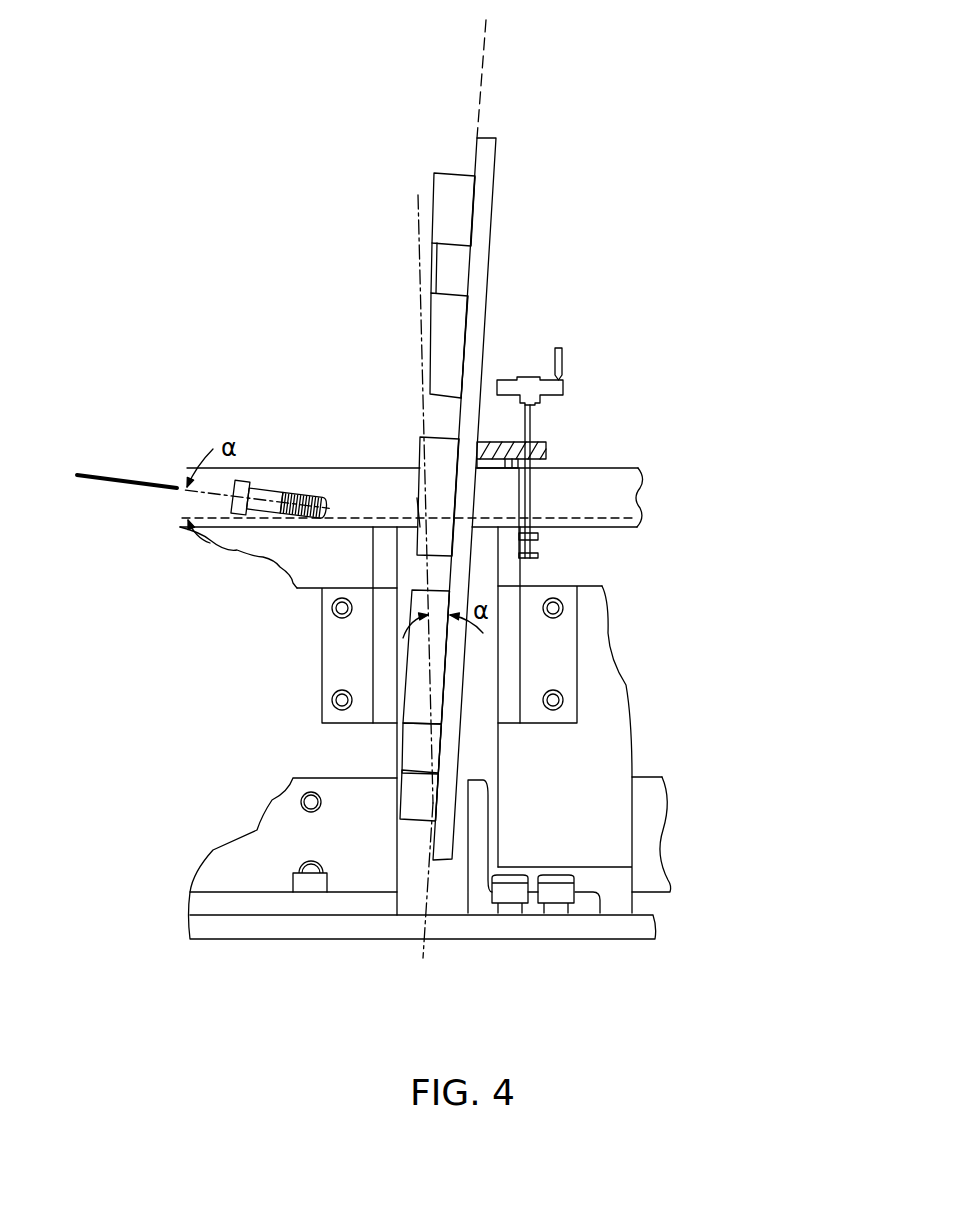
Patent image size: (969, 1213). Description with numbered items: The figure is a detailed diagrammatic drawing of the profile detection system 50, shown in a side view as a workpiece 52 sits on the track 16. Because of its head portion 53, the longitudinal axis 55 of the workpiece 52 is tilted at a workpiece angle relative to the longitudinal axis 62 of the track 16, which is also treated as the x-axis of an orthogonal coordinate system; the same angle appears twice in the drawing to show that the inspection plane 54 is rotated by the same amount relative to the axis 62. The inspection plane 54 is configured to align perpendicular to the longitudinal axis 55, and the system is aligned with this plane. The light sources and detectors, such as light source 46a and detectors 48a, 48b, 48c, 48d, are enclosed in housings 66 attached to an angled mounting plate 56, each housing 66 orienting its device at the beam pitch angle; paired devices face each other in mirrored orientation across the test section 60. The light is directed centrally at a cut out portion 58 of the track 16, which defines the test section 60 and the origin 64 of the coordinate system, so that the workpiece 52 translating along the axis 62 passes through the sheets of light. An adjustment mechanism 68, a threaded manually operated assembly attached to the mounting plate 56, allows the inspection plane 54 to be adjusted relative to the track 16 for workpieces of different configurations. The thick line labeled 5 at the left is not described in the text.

The workpiece sheet 5 is at (106, 465).
The track 16 is at (643, 492).
The light source 46a is at (442, 188).
The detector 48a is at (410, 807).
The detector 48b is at (408, 747).
The detector 48c is at (432, 462).
The detector 48d is at (445, 338).
The profile detection system 50 is at (550, 240).
The workpiece 52 is at (257, 507).
The head portion 53 is at (240, 515).
The inspection plane 54 is at (486, 62).
The longitudinal axis of the workpiece 55 is at (182, 488).
The mounting plate 56 is at (480, 312).
The cut out portion 58 is at (410, 494).
The test section 60 is at (428, 880).
The longitudinal axis of the track 62 is at (657, 518).
The origin 64 is at (418, 512).
The housings 66 is at (457, 207).
The adjustment mechanism 68 is at (607, 400).